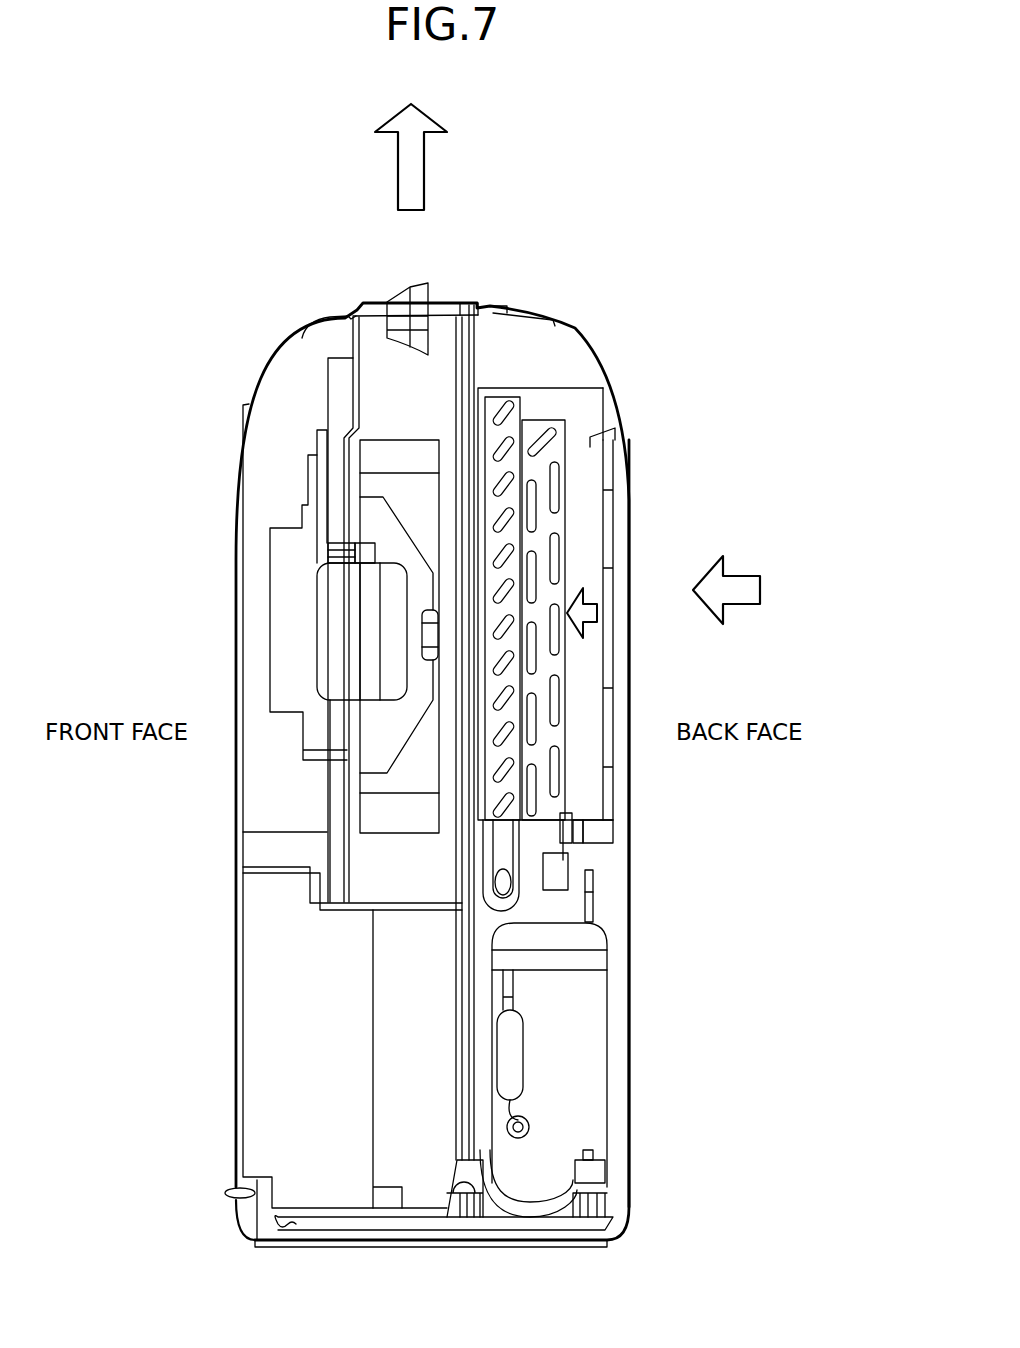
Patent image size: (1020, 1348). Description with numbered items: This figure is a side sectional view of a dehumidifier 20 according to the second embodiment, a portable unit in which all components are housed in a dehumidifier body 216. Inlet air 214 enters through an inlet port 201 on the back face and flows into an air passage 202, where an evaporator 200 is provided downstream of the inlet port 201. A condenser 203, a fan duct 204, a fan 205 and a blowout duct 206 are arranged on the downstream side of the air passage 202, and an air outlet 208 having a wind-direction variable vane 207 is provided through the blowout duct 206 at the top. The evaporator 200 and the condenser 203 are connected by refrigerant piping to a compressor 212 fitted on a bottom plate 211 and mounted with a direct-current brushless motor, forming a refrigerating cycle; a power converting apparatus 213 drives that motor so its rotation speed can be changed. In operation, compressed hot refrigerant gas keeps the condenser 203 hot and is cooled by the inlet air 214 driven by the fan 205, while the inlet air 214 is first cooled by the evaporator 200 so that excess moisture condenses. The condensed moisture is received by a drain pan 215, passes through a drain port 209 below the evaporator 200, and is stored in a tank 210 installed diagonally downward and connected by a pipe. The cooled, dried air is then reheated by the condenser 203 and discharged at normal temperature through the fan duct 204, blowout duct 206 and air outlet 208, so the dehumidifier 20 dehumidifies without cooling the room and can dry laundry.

The dehumidifier 20 is at (648, 175).
The evaporator 200 is at (544, 420).
The inlet port 201 is at (603, 528).
The air passage 202 is at (577, 455).
The condenser 203 is at (505, 395).
The fan duct 204 is at (477, 753).
The fan 205 is at (362, 458).
The blowout duct 206 is at (390, 393).
The wind-direction variable vane 207 is at (412, 290).
The air outlet 208 is at (372, 338).
The drain port 209 is at (510, 893).
The tank 210 is at (257, 1062).
The bottom plate 211 is at (515, 1243).
The compressor 212 is at (567, 1068).
The power converting apparatus 213 is at (565, 855).
The inlet air 214 is at (603, 635).
The drain pan 215 is at (560, 832).
The dehumidifier body 216 is at (632, 1017).